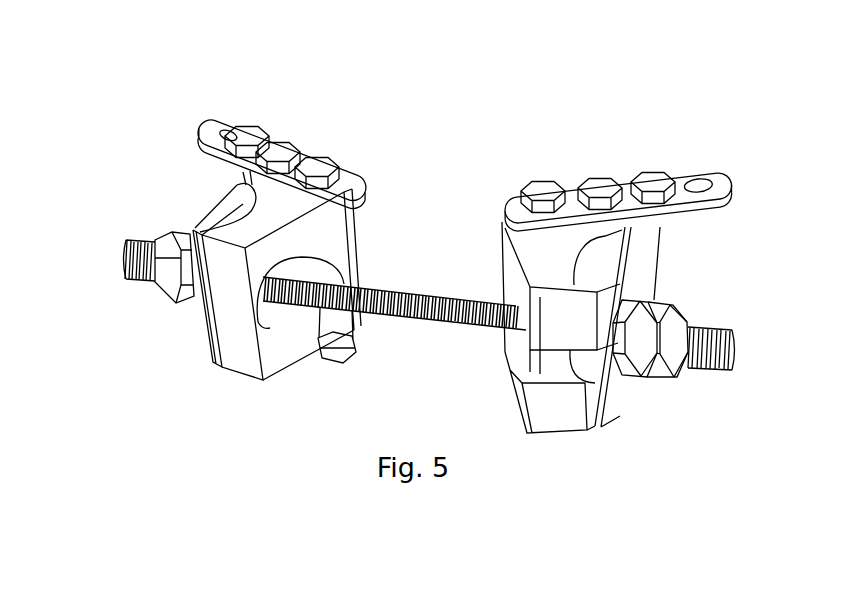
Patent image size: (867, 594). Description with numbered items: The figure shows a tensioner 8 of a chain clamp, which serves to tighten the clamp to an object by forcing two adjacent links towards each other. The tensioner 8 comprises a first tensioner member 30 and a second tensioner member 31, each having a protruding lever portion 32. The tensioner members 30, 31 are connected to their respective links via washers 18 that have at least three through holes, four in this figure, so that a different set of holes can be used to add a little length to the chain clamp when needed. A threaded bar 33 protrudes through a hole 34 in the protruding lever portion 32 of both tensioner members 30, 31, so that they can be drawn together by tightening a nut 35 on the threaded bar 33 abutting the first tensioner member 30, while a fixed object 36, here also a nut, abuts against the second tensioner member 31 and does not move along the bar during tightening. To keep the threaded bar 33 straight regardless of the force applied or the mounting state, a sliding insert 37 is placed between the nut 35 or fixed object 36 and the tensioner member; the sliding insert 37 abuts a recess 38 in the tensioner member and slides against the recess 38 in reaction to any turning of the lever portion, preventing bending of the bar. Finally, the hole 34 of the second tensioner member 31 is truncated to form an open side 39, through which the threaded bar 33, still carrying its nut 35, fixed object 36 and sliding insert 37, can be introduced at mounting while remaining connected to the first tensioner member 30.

The tensioner 8 is at (230, 497).
The washers 18 is at (215, 127).
The first tensioner member 30 is at (325, 232).
The second tensioner member 31 is at (510, 247).
The protruding lever portion 32 is at (227, 310).
The threaded bar 33 is at (430, 300).
The hole 34 is at (272, 311).
The nut 35 is at (190, 270).
The fixed object 36 is at (633, 343).
The sliding insert 37 is at (235, 196).
The recess 38 is at (236, 197).
The open side 39 is at (517, 366).